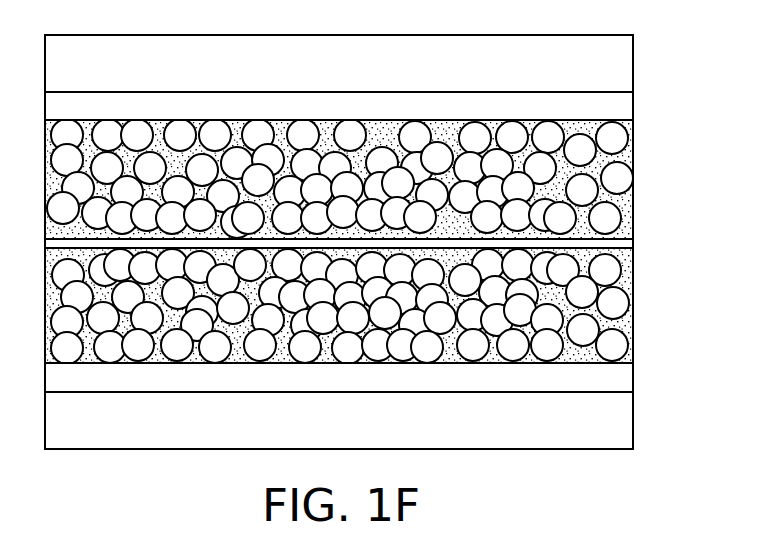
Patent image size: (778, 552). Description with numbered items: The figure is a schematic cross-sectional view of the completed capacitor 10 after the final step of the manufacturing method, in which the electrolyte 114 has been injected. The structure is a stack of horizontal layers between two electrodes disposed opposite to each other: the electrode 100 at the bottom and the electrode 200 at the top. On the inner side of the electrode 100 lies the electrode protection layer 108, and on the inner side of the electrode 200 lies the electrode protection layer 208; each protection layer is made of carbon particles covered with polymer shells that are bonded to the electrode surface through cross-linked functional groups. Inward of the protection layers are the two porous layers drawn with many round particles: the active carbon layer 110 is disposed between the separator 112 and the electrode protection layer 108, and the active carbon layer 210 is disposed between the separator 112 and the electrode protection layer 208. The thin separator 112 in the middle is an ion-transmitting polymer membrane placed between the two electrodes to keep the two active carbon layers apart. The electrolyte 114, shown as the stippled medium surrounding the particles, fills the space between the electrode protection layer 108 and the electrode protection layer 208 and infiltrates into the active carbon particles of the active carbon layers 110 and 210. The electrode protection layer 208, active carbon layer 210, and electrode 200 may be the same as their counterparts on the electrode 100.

The capacitor 10 is at (640, 12).
The electrode 100 is at (612, 421).
The electrode protection layer 108 is at (612, 378).
The active carbon layer 110 is at (637, 250).
The separator 112 is at (633, 243).
The electrolyte 114 is at (637, 236).
The active carbon layer 210 is at (381, 179).
The electrode protection layer 208 is at (612, 106).
The electrode 200 is at (612, 64).